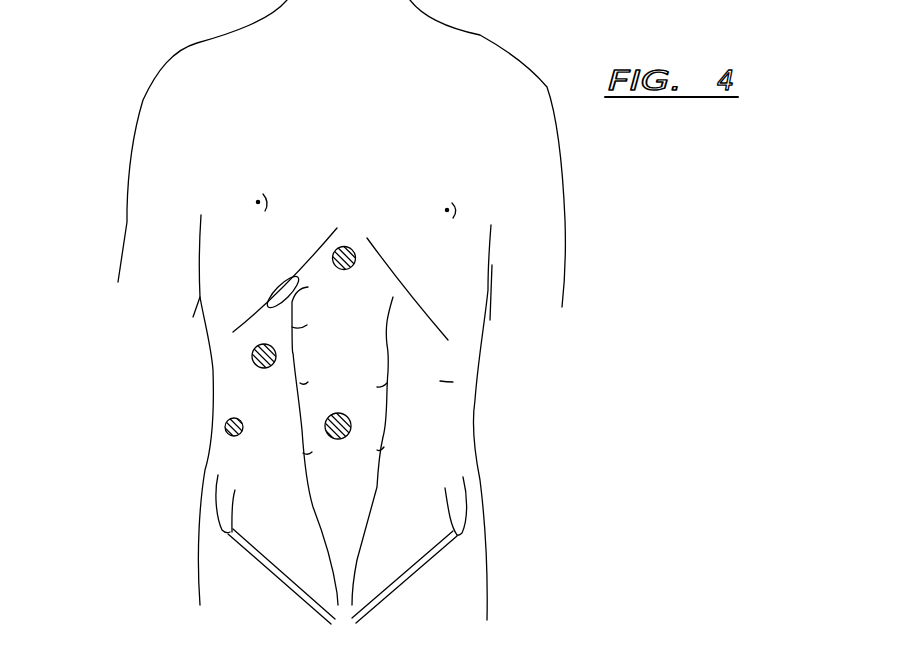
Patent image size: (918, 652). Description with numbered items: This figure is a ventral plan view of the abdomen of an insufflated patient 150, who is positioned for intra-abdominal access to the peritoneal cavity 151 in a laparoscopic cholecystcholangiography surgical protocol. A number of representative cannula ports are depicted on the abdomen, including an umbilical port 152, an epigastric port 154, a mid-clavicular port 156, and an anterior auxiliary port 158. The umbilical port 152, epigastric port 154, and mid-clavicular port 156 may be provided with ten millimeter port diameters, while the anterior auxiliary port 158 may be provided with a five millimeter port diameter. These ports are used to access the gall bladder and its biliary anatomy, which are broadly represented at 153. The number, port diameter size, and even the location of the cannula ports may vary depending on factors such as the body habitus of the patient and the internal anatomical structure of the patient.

The insufflated patient 150 is at (645, 252).
The peritoneal cavity 151 is at (453, 382).
The umbilical port 152 is at (351, 420).
The gall bladder and biliary anatomy 153 is at (283, 273).
The epigastric port 154 is at (352, 247).
The mid-clavicular port 156 is at (252, 354).
The anterior auxiliary port 158 is at (225, 424).